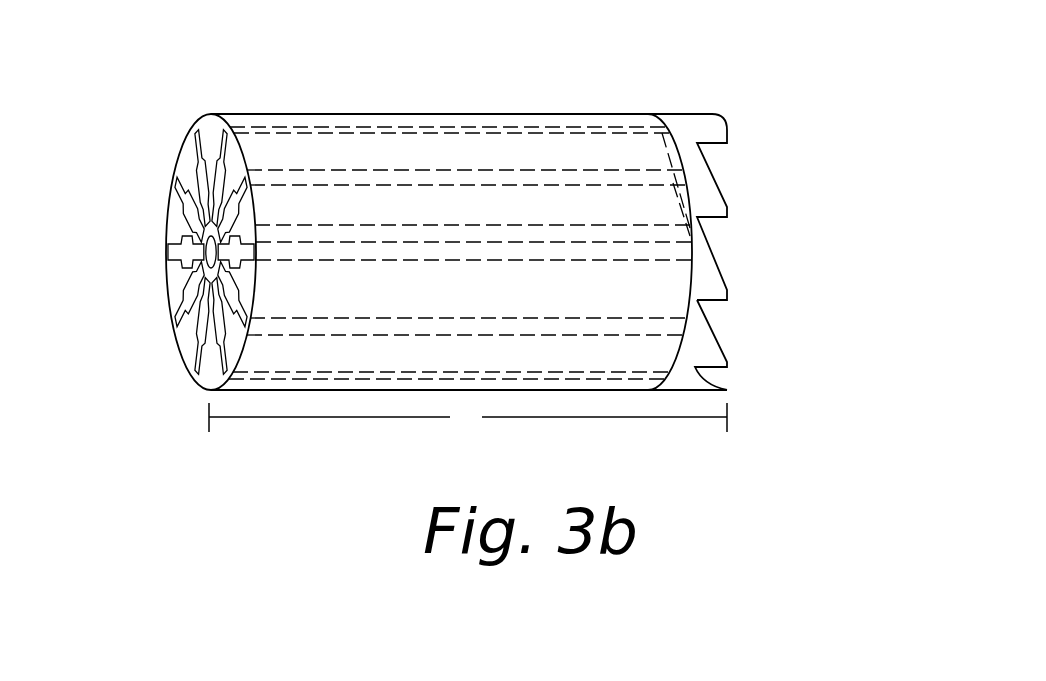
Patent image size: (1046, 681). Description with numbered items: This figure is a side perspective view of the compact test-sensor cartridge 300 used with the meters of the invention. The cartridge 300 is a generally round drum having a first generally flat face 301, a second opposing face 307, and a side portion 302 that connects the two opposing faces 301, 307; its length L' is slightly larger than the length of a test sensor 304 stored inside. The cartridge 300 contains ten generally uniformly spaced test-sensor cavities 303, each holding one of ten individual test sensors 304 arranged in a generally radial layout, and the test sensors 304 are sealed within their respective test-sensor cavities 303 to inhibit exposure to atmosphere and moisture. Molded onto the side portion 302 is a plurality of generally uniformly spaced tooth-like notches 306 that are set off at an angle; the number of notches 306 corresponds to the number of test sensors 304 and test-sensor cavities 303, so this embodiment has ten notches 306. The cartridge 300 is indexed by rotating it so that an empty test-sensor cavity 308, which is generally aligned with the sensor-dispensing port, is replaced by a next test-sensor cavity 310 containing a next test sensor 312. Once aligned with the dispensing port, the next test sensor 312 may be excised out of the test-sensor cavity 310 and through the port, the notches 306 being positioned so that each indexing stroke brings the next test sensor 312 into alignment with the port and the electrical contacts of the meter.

The cartridge 300 is at (794, 55).
The first generally flat face 301 is at (168, 232).
The side portion 302 is at (318, 114).
The test-sensor cavities 303 is at (182, 294).
The test sensor 304 is at (549, 140).
The tooth-like notches 306 is at (723, 348).
The second opposing face 307 is at (746, 311).
The empty test-sensor cavity 308 is at (218, 312).
The next test-sensor cavity 310 is at (220, 202).
The next test sensor 312 is at (429, 184).